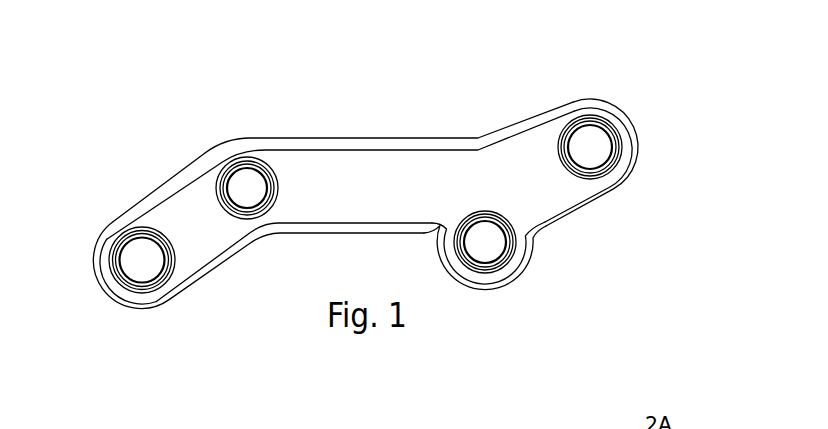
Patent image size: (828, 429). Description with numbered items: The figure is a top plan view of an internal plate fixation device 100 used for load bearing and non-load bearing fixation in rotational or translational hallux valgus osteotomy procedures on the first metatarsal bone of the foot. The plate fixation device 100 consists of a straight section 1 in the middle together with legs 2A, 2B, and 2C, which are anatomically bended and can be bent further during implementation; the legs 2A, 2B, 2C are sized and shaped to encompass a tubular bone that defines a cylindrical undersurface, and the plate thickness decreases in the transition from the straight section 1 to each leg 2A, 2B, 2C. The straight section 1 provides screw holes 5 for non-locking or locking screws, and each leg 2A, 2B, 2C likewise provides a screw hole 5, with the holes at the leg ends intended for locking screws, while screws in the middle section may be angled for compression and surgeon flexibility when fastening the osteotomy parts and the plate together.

The internal plate fixation device 100 is at (165, 128).
The straight section 1 is at (413, 128).
The leg 2A is at (658, 105).
The leg 2B is at (528, 293).
The leg 2C is at (140, 323).
The screw holes 5 is at (233, 207).